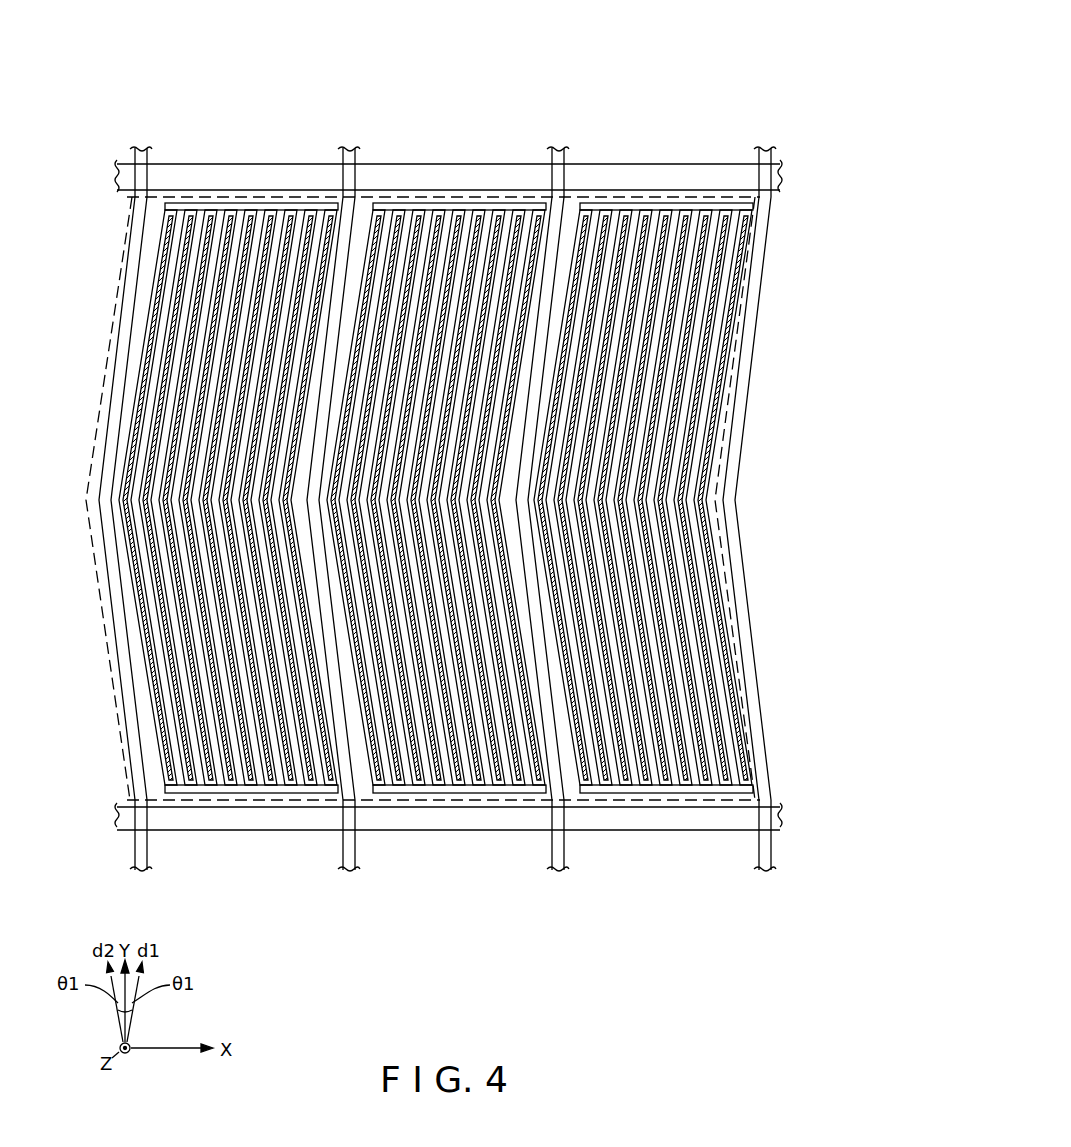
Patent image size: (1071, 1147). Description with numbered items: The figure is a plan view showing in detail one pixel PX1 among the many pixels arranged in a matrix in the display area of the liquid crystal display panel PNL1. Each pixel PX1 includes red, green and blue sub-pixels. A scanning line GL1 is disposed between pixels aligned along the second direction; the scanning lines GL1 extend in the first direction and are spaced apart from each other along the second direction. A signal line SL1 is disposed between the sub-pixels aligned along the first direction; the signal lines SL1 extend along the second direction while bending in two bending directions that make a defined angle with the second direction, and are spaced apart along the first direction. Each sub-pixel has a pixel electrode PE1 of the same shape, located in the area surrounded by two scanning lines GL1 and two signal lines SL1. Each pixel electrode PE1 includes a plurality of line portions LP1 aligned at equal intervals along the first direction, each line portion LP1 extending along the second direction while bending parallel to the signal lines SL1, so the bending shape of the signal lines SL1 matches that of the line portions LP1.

The liquid crystal display panel PNL1 is at (764, 86).
The pixel PX1 is at (258, 197).
The pixel electrode PE1 is at (199, 203).
The scanning line GL1 is at (472, 164).
The signal line SL1 is at (148, 845).
The line portion LP1 is at (177, 390).